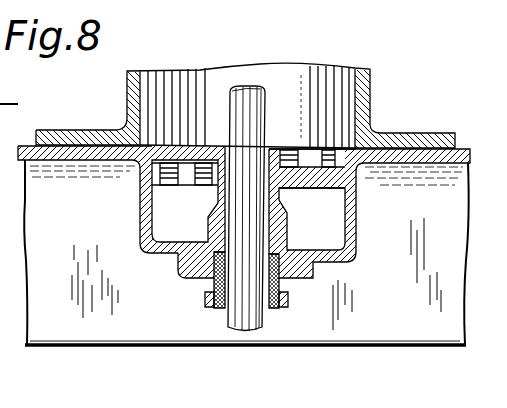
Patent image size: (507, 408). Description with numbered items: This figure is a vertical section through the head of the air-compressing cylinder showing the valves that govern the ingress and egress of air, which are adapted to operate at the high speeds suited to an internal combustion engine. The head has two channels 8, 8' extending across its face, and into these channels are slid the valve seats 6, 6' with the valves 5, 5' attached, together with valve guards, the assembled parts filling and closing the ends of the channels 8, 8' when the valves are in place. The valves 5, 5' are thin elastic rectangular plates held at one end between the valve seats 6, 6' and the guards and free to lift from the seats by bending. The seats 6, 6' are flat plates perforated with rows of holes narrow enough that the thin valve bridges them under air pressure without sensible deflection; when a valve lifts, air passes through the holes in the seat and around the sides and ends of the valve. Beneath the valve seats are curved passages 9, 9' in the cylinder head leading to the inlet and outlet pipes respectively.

The valve seat 6' is at (247, 105).
The channel 8 is at (312, 145).
The valve 5 is at (312, 166).
The channel 8' is at (164, 184).
The valve 5' is at (185, 201).
The valve seat 6 is at (312, 219).
The curved passage 9' is at (146, 210).
The curved passage 9 is at (344, 216).